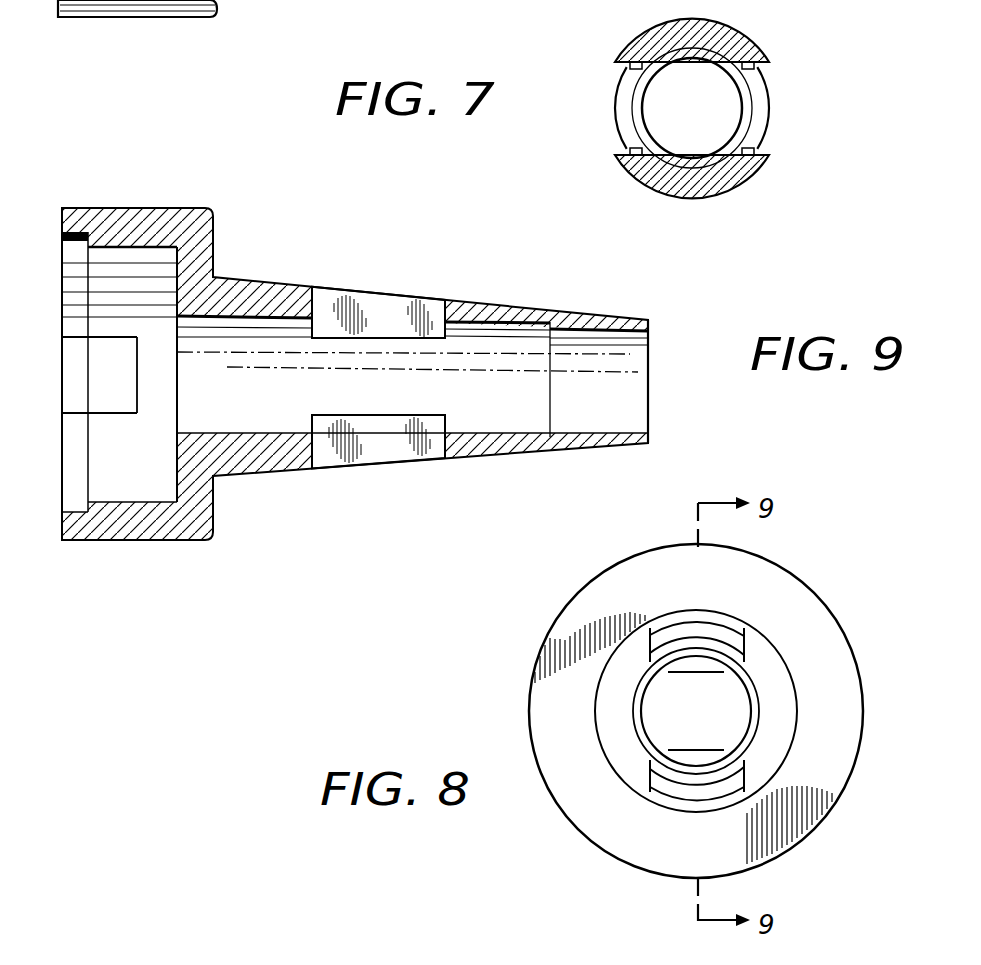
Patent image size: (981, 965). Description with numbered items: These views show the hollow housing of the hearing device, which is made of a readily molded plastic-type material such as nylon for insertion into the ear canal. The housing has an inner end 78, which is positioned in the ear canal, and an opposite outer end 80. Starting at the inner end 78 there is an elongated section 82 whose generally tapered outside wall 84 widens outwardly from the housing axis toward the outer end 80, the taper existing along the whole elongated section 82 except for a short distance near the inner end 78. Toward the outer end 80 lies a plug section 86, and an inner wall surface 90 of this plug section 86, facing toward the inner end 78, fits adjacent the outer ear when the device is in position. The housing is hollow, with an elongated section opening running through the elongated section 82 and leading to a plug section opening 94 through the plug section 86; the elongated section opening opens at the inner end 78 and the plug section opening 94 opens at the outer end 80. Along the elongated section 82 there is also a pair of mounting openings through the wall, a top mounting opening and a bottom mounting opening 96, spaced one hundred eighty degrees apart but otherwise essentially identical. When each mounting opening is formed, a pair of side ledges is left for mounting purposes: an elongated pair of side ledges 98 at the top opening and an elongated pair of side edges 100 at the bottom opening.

In FIG. 7, the inner end 78 is at (650, 327).
In FIG. 7, the outer end 80 is at (490, 390).
In FIG. 7, the elongated section 82 is at (463, 453).
In FIG. 7, the tapered outside wall 84 is at (273, 470).
In FIG. 7, the plug section 86 is at (131, 208).
In FIG. 7, the inner wall surface 90 is at (214, 246).
In FIG. 7, the plug section opening 94 is at (443, 313).
In FIG. 9, the plug section opening 94 is at (627, 67).
In FIG. 7, the bottom mounting opening 96 is at (420, 447).
In FIG. 9, the side ledges 98 is at (625, 68).
In FIG. 9, the side edges 100 is at (760, 72).